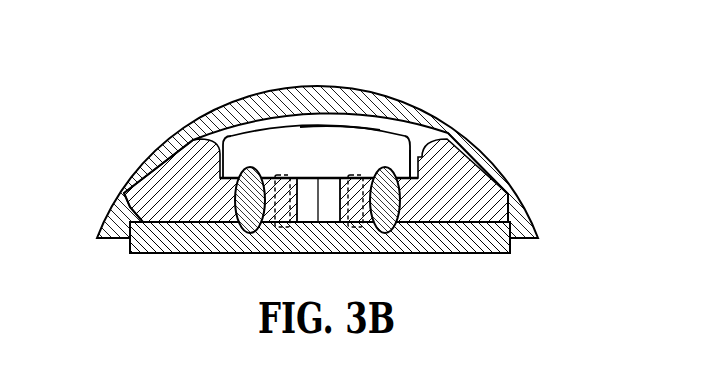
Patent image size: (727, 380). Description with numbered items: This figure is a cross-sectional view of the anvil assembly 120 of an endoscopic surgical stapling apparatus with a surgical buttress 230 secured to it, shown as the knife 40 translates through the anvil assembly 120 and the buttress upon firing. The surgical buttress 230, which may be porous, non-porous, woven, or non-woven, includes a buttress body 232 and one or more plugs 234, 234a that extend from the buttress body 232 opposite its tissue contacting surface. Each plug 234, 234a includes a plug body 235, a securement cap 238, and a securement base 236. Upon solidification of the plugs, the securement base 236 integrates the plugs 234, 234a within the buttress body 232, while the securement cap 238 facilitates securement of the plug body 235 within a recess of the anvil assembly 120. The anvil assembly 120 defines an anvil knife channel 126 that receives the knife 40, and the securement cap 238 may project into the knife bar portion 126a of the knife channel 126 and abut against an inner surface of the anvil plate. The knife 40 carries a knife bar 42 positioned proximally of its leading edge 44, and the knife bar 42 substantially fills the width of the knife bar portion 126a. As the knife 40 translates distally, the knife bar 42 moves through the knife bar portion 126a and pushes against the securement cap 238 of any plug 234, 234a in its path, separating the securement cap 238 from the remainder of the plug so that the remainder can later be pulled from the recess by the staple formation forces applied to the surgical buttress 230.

The anvil assembly 120 is at (163, 145).
The anvil knife channel 126 is at (415, 126).
The knife bar portion of the knife channel 126a is at (222, 131).
The plug 234a is at (284, 176).
The knife bar 42 is at (335, 145).
The knife 40 is at (375, 128).
The securement cap 238 is at (413, 126).
The plug 234 is at (402, 187).
The plug body 235 is at (405, 210).
The buttress body 232 is at (170, 254).
The leading edge 44 is at (318, 204).
The securement base 236 is at (388, 238).
The surgical buttress 230 is at (513, 259).